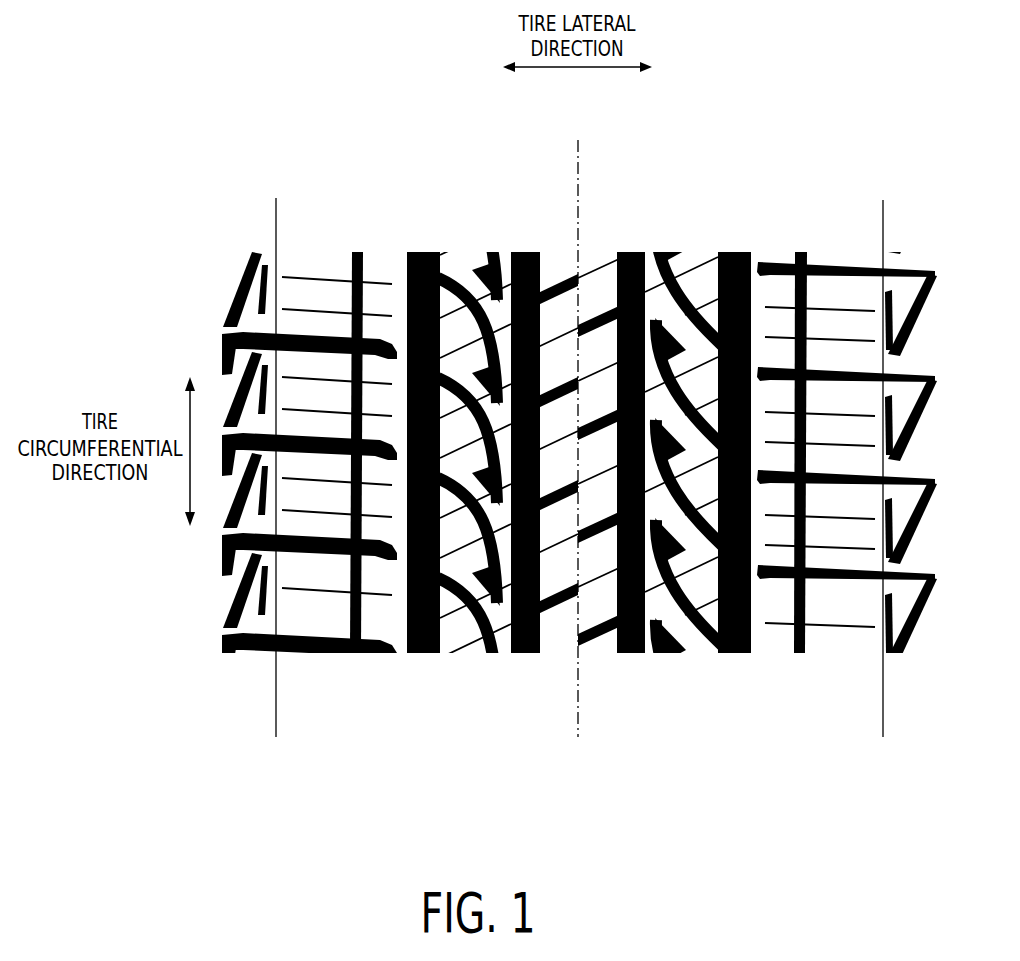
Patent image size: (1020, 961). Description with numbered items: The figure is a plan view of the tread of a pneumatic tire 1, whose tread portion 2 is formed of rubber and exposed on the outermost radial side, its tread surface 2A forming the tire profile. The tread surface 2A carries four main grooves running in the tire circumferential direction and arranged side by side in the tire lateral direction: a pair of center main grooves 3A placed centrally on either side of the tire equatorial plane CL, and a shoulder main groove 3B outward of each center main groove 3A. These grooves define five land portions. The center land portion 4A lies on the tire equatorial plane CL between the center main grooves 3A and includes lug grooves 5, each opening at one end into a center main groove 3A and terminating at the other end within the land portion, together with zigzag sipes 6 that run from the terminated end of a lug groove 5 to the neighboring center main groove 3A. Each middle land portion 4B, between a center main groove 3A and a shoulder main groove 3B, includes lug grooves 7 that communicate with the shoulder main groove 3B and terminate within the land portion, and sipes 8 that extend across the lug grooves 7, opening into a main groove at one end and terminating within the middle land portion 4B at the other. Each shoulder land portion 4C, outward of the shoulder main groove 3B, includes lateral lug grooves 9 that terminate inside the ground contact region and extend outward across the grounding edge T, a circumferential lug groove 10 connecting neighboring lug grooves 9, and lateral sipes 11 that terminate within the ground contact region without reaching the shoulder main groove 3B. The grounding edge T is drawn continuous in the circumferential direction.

The pneumatic tire 1 is at (792, 198).
The tread portion 2 is at (680, 268).
The tread surface 2A is at (598, 268).
The center main groove 3A is at (525, 250).
The shoulder main groove 3B is at (422, 250).
The center land portion 4A is at (560, 626).
The middle land portion 4B is at (462, 626).
The shoulder land portion 4C is at (329, 616).
The lug groove 5 is at (559, 268).
The sipe 6 is at (565, 347).
The lug groove 7 is at (458, 268).
The sipe 8 is at (468, 356).
The lug groove 9 is at (305, 268).
The lug groove 10 is at (352, 258).
The sipe 11 is at (368, 300).
The tire equatorial plane CL is at (583, 150).
The grounding edge T is at (579, 485).